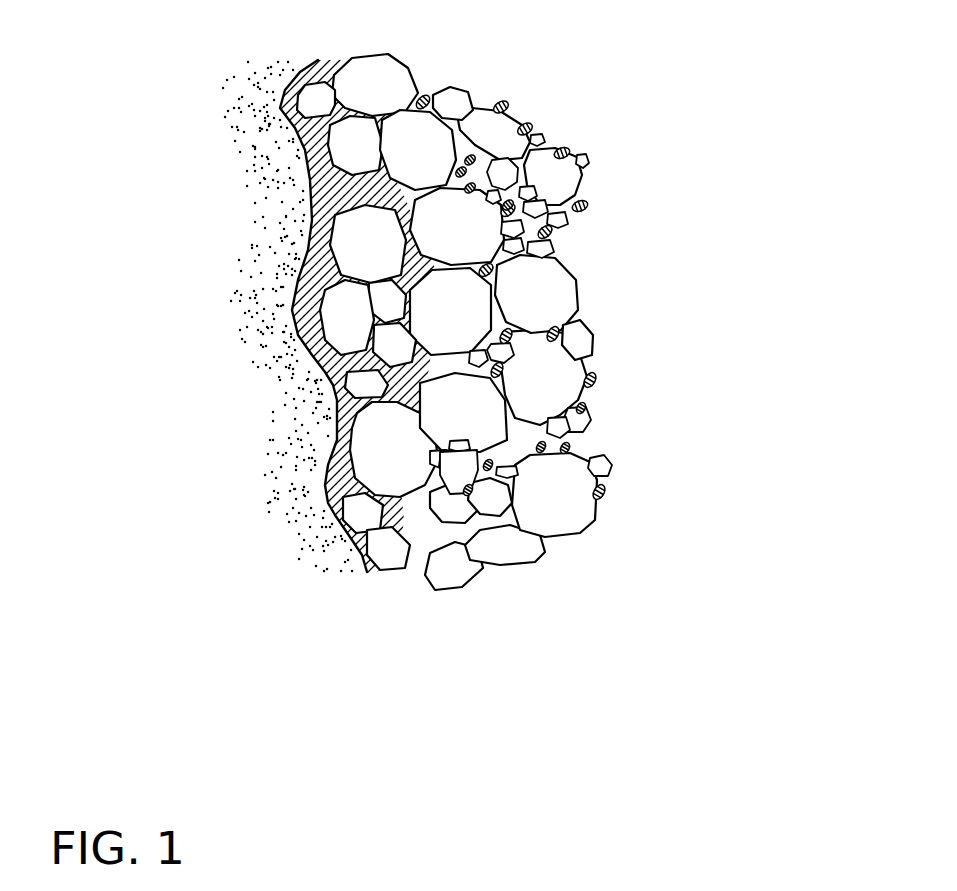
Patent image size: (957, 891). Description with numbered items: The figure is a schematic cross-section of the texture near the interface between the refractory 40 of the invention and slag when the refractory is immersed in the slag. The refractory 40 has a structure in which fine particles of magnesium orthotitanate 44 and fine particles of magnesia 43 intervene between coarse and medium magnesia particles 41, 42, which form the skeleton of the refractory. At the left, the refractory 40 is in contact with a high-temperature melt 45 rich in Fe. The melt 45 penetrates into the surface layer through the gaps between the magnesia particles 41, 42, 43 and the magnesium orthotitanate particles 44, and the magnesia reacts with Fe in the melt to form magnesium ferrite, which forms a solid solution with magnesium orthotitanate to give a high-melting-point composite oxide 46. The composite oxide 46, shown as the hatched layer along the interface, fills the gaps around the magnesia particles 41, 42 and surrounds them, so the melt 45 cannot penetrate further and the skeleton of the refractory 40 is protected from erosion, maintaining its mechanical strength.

The refractory 40 is at (454, 390).
The coarse magnesia particles 41 is at (562, 290).
The medium magnesia particles 42 is at (457, 97).
The fine particles of magnesia 43 is at (584, 158).
The fine particles of magnesium orthotitanate 44 is at (583, 207).
The high-temperature melt 45 is at (258, 312).
The composite oxide 46 is at (303, 190).